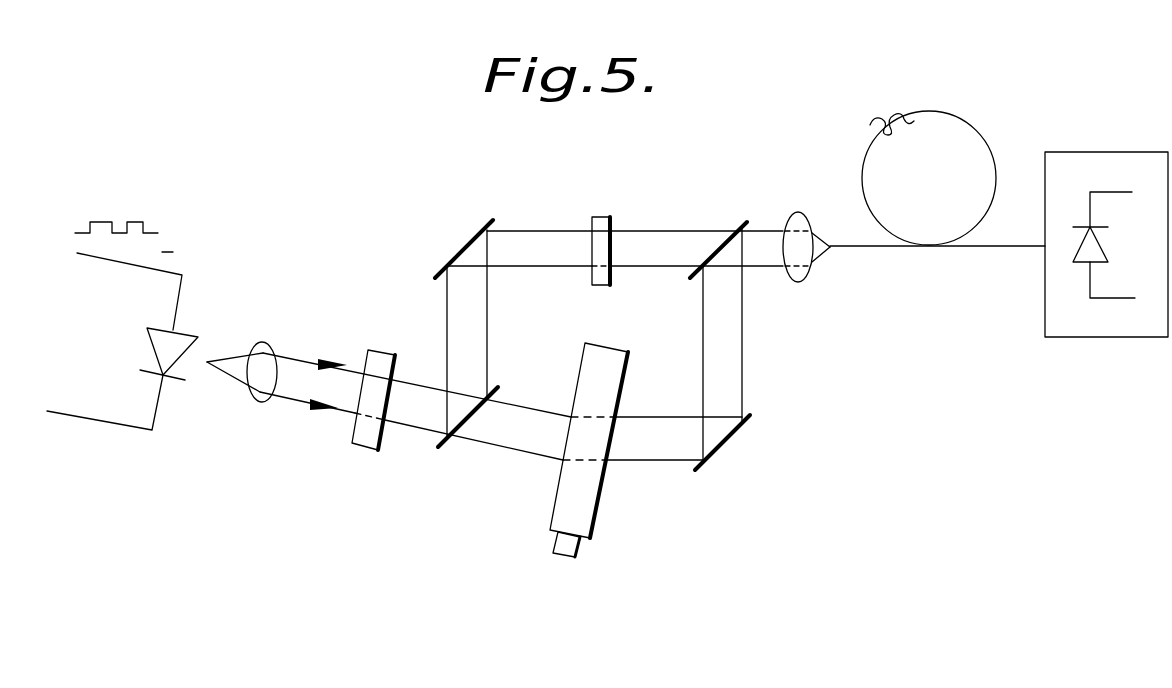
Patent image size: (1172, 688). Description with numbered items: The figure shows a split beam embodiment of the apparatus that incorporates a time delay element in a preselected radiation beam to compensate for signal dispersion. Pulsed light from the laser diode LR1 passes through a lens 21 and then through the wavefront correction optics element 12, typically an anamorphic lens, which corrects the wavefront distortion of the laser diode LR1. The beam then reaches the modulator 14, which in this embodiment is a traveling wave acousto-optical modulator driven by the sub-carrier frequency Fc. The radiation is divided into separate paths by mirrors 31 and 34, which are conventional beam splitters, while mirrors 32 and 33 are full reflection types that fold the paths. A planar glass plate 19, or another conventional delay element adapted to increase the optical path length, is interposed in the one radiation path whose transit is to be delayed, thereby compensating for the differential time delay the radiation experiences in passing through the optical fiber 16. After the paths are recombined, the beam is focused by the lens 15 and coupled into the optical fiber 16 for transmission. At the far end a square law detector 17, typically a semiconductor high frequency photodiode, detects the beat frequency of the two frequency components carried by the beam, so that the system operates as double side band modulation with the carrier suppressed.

The laser diode LR1 is at (165, 353).
The collimating lens 21 is at (259, 390).
The wavefront correction optics element 12 is at (410, 340).
The mirror 33 is at (461, 253).
The mirror 31 is at (497, 392).
The planar glass plate 19 is at (603, 223).
The mirror 34 is at (746, 196).
The lens 15 is at (822, 190).
The optical fiber 16 is at (946, 158).
The square law detector 17 is at (1062, 325).
The traveling wave acousto-optical modulator 14 is at (572, 498).
The mirror 32 is at (700, 470).
The sub-carrier frequency Fc is at (562, 562).